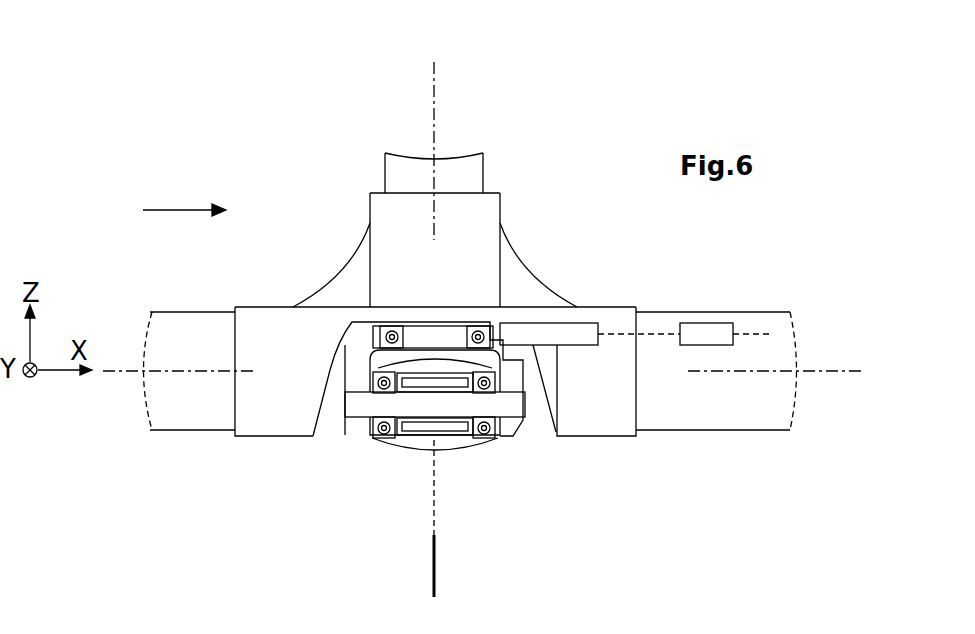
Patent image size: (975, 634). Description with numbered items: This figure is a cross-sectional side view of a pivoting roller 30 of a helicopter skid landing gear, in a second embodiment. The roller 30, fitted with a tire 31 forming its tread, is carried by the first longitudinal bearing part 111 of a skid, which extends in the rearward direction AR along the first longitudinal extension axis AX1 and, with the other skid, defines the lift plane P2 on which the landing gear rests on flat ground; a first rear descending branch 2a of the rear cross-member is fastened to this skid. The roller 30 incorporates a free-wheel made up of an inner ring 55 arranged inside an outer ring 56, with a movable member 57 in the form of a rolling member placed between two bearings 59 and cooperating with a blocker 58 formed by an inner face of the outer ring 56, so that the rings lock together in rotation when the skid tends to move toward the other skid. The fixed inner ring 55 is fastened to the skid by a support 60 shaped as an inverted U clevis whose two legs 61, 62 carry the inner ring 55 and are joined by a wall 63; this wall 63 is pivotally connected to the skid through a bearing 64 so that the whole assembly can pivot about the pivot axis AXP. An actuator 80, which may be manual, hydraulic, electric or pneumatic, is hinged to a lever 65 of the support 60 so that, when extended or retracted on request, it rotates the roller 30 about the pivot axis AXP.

The first rear descending branch 2a is at (455, 217).
The pivot axis AXP is at (434, 97).
The rearward direction AR is at (185, 210).
The first longitudinal bearing part 111 is at (185, 410).
The first longitudinal extension axis AX1 is at (828, 372).
The lever 65 is at (580, 323).
The actuator 80 is at (725, 323).
The support 60 is at (509, 358).
The leg 61 is at (525, 368).
The wall 63 is at (377, 335).
The bearing 64 is at (392, 330).
The blocker 58 is at (395, 385).
The outer ring 56 is at (457, 370).
The leg 62 is at (357, 377).
The inner ring 55 is at (512, 404).
The bearing 59 is at (378, 425).
The movable member 57 is at (445, 430).
The tire 31 is at (410, 450).
The roller 30 is at (372, 465).
The lift plane P2 is at (438, 558).